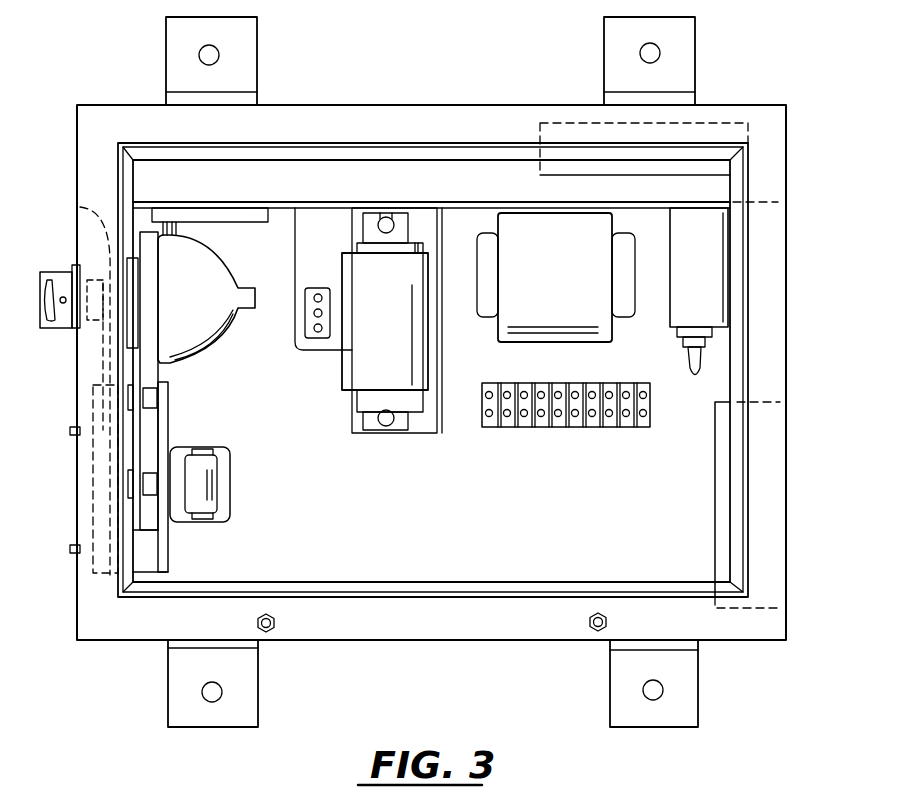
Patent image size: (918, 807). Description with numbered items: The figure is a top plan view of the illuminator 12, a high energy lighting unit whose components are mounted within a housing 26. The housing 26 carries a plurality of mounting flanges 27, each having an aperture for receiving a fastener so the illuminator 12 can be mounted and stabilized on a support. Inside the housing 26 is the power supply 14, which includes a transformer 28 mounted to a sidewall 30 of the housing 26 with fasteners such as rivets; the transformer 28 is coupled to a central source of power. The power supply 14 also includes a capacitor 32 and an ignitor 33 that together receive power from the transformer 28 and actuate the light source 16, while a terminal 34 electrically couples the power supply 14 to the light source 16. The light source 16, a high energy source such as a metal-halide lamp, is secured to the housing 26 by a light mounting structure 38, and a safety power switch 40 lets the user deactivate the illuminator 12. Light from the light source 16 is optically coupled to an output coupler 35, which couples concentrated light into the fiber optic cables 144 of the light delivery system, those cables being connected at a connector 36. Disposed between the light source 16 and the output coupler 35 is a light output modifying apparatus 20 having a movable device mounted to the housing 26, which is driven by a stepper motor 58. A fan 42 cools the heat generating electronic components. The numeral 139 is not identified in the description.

The illuminator 12 is at (740, 62).
The power supply 14 is at (458, 238).
The light source 16 is at (198, 333).
The light output modifying apparatus 20 is at (86, 415).
The housing 26 is at (765, 104).
The mounting flanges 27 is at (165, 53).
The transformer 28 is at (577, 332).
The sidewall 30 is at (566, 405).
The capacitor 32 is at (418, 368).
The ignitor 33 is at (414, 402).
The terminal 34 is at (317, 338).
The output coupler 35 is at (80, 242).
The connector 36 is at (53, 332).
The light mounting structure 38 is at (206, 240).
The safety power switch 40 is at (697, 373).
The fan 42 is at (712, 533).
The stepper motor 58 is at (220, 493).
The mounting plate 139 is at (140, 240).
The fiber optic cables 144 is at (80, 207).